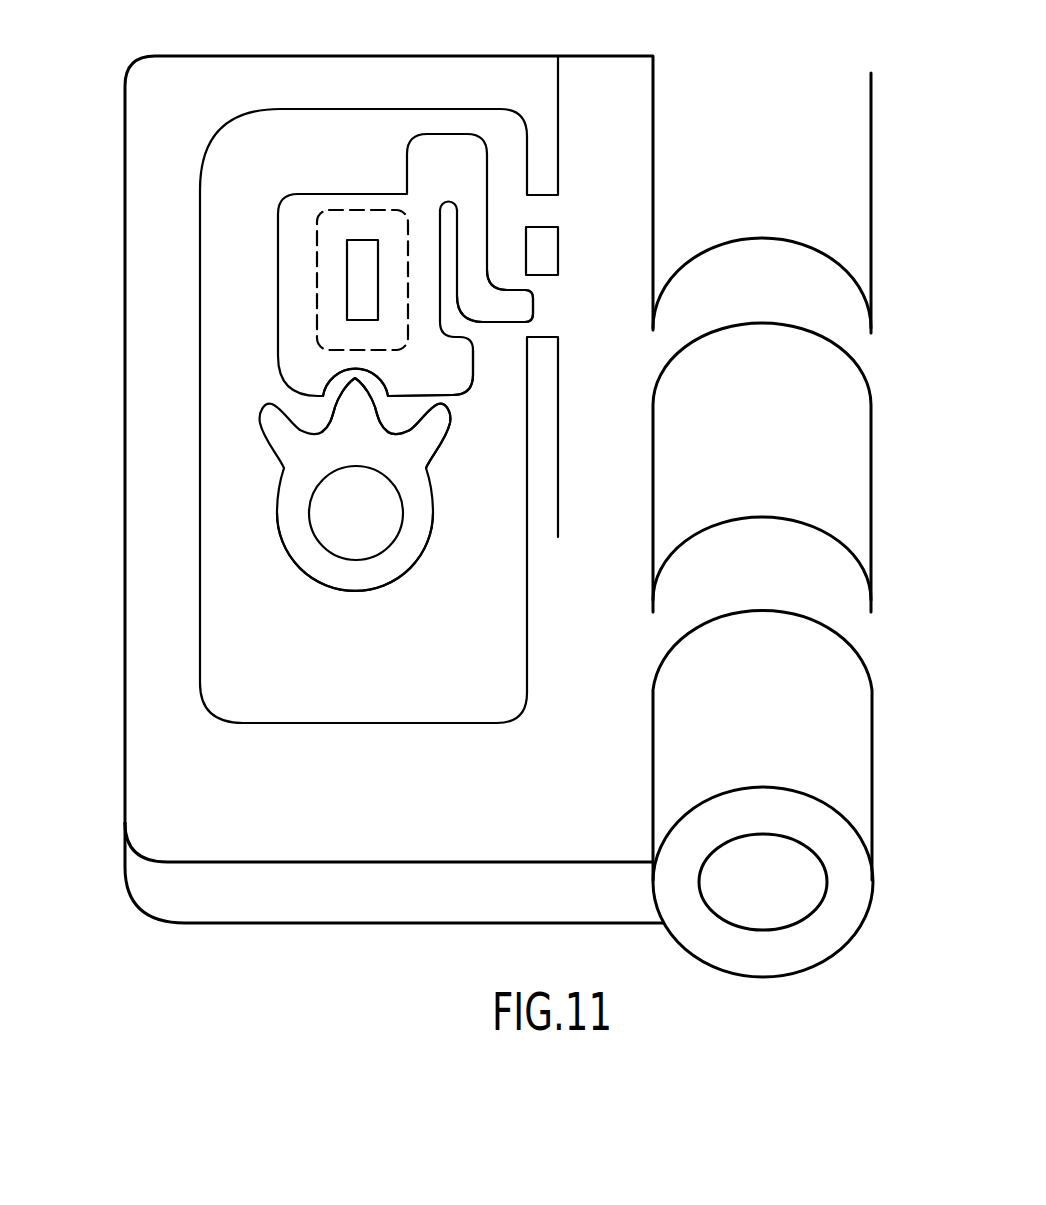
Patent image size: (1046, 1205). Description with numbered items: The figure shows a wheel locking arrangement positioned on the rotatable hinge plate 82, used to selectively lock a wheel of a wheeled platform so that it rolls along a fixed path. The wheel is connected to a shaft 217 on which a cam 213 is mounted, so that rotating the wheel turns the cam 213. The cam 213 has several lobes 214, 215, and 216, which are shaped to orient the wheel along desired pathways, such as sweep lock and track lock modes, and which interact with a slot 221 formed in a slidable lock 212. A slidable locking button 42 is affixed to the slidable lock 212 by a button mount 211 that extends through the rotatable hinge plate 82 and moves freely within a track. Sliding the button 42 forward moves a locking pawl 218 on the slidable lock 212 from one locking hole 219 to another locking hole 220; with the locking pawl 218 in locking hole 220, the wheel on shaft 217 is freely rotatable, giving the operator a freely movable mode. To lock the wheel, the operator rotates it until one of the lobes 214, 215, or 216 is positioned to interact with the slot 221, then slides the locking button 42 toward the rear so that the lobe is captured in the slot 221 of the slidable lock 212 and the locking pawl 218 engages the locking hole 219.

The rotatable hinge plate 82 is at (133, 97).
The locking hole 220 is at (545, 213).
The locking hole 219 is at (475, 307).
The slidable locking button 42 is at (380, 290).
The button mount 211 is at (372, 293).
The locking pawl 218 is at (487, 303).
The slot 221 is at (373, 380).
The slidable lock 212 is at (455, 385).
The lobe 216 is at (268, 418).
The lobe 215 is at (350, 413).
The lobe 214 is at (437, 432).
The cam 213 is at (420, 535).
The shaft 217 is at (367, 538).